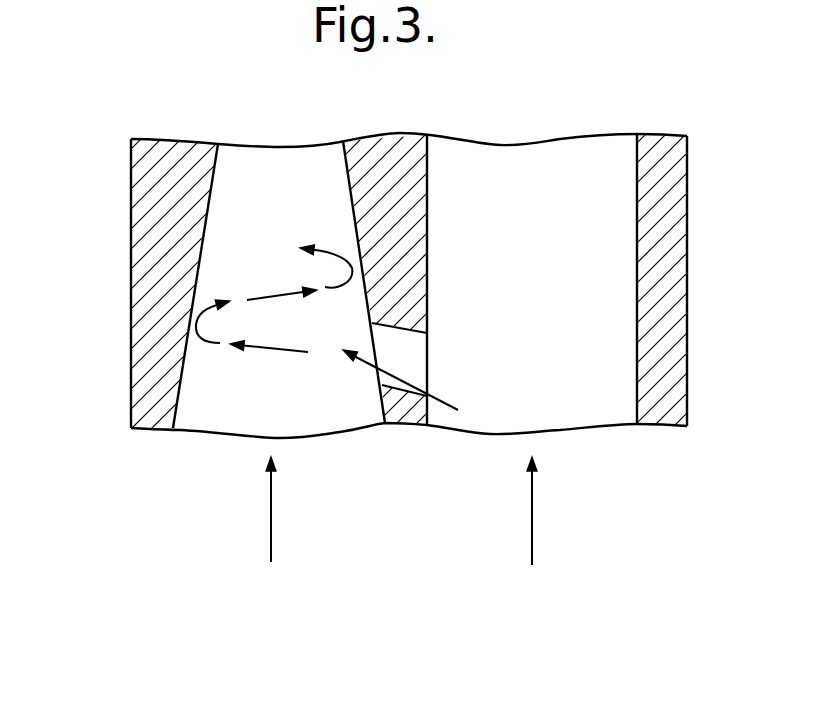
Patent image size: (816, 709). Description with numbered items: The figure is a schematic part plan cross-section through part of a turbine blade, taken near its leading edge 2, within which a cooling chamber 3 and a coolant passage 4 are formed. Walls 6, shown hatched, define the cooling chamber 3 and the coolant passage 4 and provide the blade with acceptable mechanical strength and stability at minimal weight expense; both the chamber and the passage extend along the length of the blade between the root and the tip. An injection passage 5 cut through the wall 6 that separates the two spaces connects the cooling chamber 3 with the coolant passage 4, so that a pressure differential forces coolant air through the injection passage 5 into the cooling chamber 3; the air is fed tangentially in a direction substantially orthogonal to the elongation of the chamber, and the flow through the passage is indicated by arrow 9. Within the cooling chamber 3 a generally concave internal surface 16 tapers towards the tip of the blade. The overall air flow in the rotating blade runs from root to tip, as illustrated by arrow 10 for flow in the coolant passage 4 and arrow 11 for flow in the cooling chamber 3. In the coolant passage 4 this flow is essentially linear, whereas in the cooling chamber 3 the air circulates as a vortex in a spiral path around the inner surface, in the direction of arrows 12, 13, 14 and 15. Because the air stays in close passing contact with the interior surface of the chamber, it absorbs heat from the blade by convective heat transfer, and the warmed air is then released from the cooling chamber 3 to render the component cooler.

The leading edge 2 is at (142, 212).
The cooling chamber 3 is at (268, 200).
The coolant passage 4 is at (551, 249).
The injection passage 5 is at (407, 354).
The walls 6 is at (412, 190).
The flow through slot 9 is at (442, 395).
The arrow indicating flow in the coolant passage 10 is at (530, 525).
The arrow indicating flow in the cooling chamber 11 is at (269, 525).
The arrow indicating circulating flow 12 is at (272, 350).
The arrow indicating circulating flow 13 is at (195, 340).
The arrow indicating circulating flow 14 is at (270, 293).
The arrow indicating circulating flow 15 is at (331, 248).
The internal surface 16 is at (220, 163).